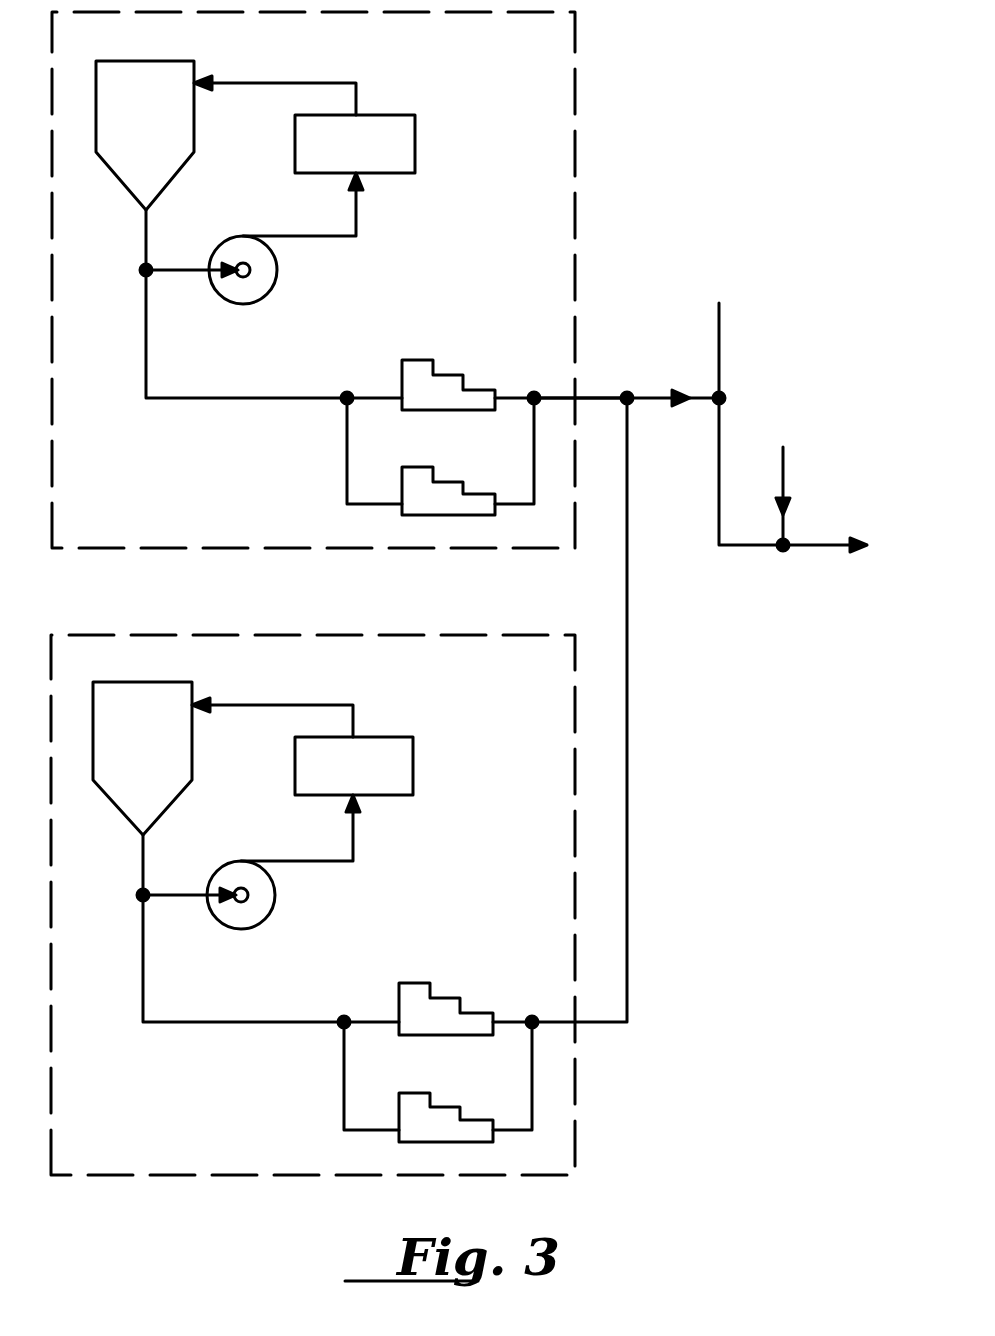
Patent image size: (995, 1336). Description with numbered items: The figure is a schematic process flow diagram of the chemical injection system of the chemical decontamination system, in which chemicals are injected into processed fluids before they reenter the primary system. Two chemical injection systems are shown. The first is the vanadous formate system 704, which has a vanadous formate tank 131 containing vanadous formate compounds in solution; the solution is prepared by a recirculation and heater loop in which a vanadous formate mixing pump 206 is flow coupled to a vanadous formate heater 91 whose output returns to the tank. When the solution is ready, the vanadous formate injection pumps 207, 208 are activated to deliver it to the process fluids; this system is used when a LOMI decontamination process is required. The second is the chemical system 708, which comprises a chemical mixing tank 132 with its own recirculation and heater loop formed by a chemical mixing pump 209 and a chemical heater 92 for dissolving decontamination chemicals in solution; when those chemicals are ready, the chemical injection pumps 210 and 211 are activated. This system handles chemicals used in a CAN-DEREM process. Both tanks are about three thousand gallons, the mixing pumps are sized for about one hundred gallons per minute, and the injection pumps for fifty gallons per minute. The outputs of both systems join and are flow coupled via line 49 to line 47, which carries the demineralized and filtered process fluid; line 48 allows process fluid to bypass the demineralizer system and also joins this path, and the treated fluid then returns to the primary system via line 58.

The vanadous formate system 704 is at (576, 138).
The chemical system 708 is at (435, 637).
The vanadous formate tank 131 is at (158, 126).
The chemical mixing tank 132 is at (162, 742).
The vanadous formate heater 91 is at (415, 147).
The chemical heater 92 is at (413, 765).
The vanadous formate mixing pump 206 is at (277, 272).
The chemical mixing pump 209 is at (264, 900).
The vanadous formate injection pump 207 is at (443, 385).
The vanadous formate injection pump 208 is at (440, 493).
The chemical injection pump 210 is at (438, 1008).
The chemical injection pump 211 is at (433, 1118).
The line 49 is at (655, 397).
The line 47 is at (719, 340).
The line 48 is at (783, 463).
The line 58 is at (837, 548).